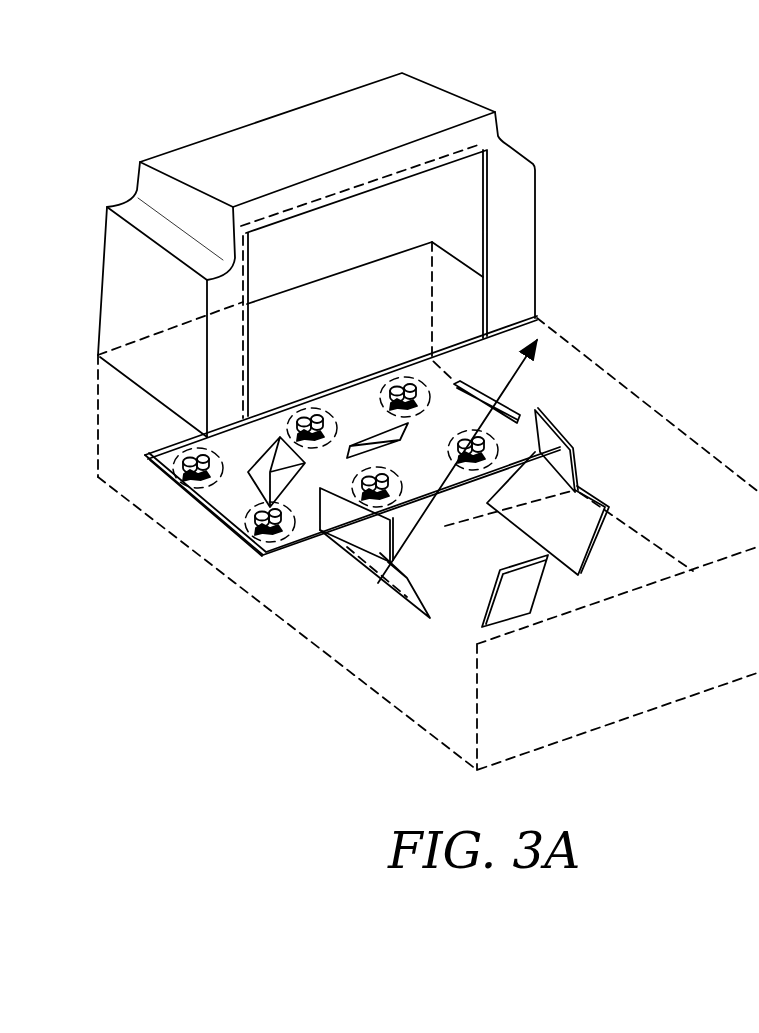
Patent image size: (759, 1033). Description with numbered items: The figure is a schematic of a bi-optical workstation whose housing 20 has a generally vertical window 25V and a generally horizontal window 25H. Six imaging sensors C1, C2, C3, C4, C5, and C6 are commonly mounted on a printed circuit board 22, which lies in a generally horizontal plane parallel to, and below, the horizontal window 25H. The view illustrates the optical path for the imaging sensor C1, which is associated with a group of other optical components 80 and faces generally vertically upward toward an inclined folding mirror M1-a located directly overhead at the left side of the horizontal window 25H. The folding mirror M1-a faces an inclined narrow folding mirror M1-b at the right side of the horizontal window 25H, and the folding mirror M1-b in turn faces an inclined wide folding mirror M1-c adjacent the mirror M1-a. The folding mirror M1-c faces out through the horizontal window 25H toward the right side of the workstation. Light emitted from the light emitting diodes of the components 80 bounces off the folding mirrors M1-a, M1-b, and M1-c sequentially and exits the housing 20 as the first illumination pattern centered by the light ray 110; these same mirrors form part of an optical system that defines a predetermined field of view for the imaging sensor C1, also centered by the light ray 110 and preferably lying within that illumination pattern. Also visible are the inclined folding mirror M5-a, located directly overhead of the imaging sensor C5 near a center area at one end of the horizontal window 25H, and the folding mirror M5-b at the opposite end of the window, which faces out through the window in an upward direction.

The housing 20 is at (515, 258).
The printed circuit board 22 is at (183, 492).
The group of other optical components 80 is at (232, 535).
The generally vertical window 25V is at (458, 207).
The generally horizontal window 25H is at (474, 513).
The light ray 110 is at (540, 341).
The imaging sensor C1 is at (275, 540).
The imaging sensor C2 is at (498, 432).
The imaging sensor C3 is at (188, 452).
The imaging sensor C4 is at (423, 397).
The imaging sensor C5 is at (360, 505).
The imaging sensor C6 is at (308, 413).
The inclined folding mirror M1-a is at (283, 463).
The inclined narrow folding mirror M1-b is at (563, 433).
The inclined wide folding mirror M1-c is at (400, 602).
The inclined folding mirror M5-a is at (383, 433).
The inclined folding mirror M5-b is at (517, 603).